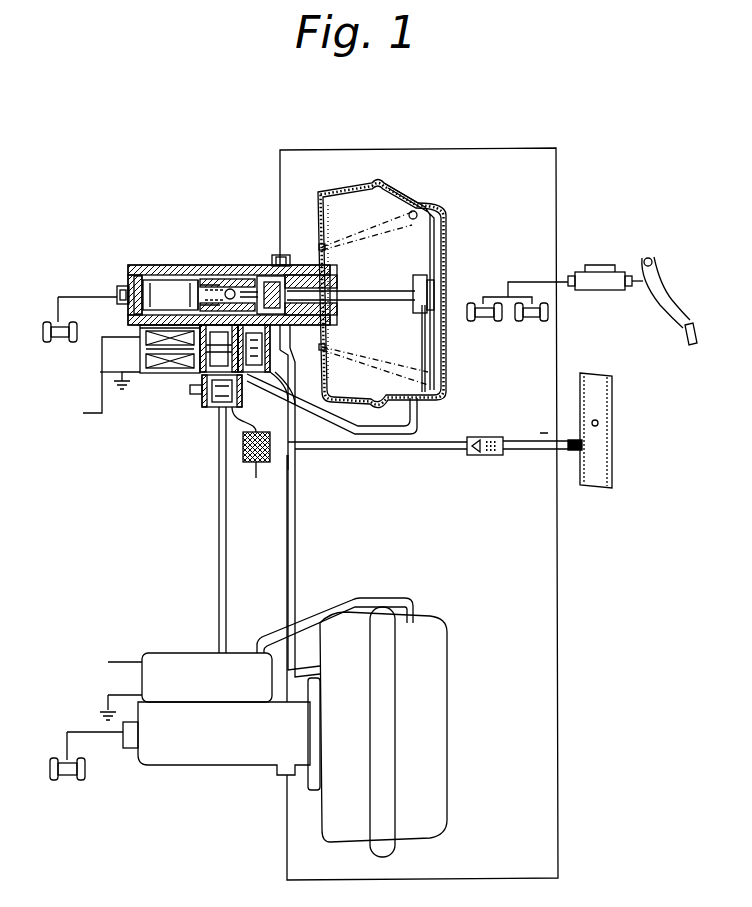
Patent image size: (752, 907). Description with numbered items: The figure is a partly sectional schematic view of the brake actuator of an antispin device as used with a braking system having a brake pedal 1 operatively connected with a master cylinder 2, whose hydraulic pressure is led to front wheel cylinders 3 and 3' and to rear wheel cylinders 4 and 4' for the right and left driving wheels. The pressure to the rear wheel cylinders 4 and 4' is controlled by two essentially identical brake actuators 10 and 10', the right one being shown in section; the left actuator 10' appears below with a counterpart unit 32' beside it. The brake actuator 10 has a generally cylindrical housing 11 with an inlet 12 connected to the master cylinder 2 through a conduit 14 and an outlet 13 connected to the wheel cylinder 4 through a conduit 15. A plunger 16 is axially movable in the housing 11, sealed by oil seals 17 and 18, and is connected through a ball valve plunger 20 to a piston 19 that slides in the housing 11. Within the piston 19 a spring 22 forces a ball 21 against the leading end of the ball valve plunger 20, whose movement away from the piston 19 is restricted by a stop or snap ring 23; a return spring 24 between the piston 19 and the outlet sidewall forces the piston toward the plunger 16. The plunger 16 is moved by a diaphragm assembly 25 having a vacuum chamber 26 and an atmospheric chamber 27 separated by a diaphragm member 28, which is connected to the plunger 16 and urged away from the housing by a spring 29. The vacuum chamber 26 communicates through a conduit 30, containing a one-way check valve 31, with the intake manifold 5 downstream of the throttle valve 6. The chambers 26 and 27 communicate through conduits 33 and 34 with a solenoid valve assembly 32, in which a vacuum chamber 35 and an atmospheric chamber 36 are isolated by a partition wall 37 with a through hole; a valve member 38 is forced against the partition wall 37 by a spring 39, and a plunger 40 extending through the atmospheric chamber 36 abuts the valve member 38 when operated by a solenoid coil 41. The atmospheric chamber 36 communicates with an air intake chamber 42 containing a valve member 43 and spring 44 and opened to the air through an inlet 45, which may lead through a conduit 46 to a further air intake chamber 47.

The brake pedal 1 is at (666, 272).
The master cylinder 2 is at (599, 265).
The front wheel cylinder 3 is at (484, 330).
The front wheel cylinder 3' is at (531, 330).
The rear wheel cylinder 4 is at (60, 344).
The rear wheel cylinder 4' is at (86, 771).
The intake manifold 5 is at (612, 462).
The throttle valve 6 is at (598, 424).
The brake actuator 10 is at (232, 261).
The brake actuator 10' is at (285, 727).
The housing 11 is at (128, 285).
The inlet 12 is at (281, 255).
The outlet 13 is at (118, 292).
The conduit 14 is at (526, 148).
The conduit 15 is at (58, 297).
The plunger 16 is at (401, 282).
The oil seal 17 is at (335, 297).
The oil seal 18 is at (330, 292).
The piston 19 is at (232, 285).
The ball valve plunger 20 is at (259, 272).
The ball 21 is at (207, 283).
The spring 22 is at (186, 288).
The stop or snap ring 23 is at (266, 278).
The return spring 24 is at (142, 268).
The diaphragm assembly 25 is at (483, 199).
The vacuum chamber 26 is at (346, 200).
The atmospheric chamber 27 is at (421, 205).
The diaphragm member 28 is at (422, 355).
The spring 29 is at (413, 220).
The conduit 30 is at (390, 450).
The one-way check valve 31 is at (485, 456).
The solenoid valve assembly 32 is at (111, 391).
The electrical lead 32' is at (186, 660).
The conduit 33 is at (302, 376).
The conduit 34 is at (340, 434).
The vacuum chamber 35 is at (295, 337).
The atmospheric chamber 36 is at (195, 375).
The partition wall 37 is at (140, 353).
The valve member 38 is at (283, 455).
The spring 39 is at (308, 444).
The plunger 40 is at (100, 372).
The solenoid coil 41 is at (140, 340).
The air intake chamber 42 is at (210, 408).
The valve member 43 is at (218, 440).
The spring 44 is at (194, 394).
The inlet 45 is at (227, 407).
The conduit 46 is at (256, 480).
The air intake chamber 47 is at (253, 463).